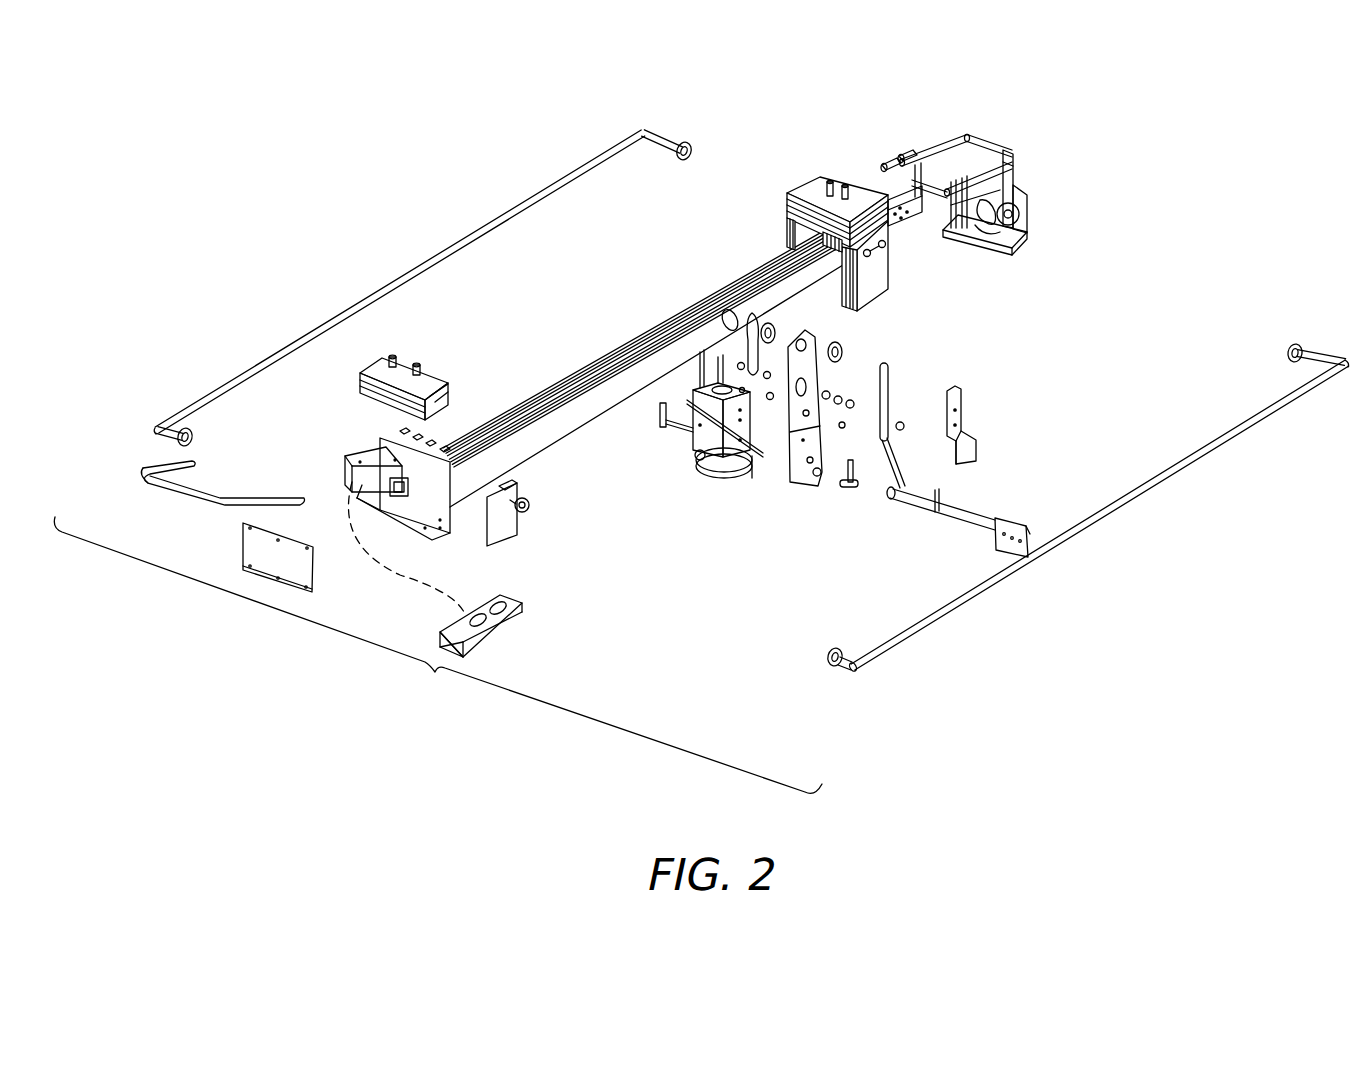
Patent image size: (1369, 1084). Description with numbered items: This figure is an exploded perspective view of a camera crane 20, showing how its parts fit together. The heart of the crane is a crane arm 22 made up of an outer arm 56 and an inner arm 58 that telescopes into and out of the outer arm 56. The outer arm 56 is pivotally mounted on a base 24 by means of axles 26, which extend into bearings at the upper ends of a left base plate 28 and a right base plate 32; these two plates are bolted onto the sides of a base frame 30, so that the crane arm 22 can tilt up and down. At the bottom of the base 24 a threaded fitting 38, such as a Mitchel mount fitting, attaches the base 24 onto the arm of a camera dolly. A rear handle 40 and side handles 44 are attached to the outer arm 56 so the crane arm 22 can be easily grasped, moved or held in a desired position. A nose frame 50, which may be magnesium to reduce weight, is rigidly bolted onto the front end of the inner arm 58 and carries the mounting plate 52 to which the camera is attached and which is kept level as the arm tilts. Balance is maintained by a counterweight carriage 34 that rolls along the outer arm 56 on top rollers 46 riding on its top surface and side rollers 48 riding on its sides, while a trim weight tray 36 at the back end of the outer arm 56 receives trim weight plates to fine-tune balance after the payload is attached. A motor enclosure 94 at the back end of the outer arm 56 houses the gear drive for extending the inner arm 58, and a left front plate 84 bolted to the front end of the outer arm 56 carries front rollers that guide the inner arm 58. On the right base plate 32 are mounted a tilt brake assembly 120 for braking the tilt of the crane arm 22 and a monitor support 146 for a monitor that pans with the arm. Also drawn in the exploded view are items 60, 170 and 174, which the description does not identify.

The camera crane 20 is at (652, 560).
The crane arm 22 is at (600, 384).
The base 24 is at (700, 484).
The axles 26 is at (731, 294).
The left base plate 28 is at (738, 470).
The base frame 30 is at (708, 451).
The right base plate 32 is at (803, 454).
The counterweight carriage 34 is at (819, 214).
The trim weight tray 36 is at (458, 382).
The threaded fitting 38 is at (728, 474).
The rear handle 40 is at (202, 494).
The side handles 44 is at (470, 236).
The top rollers 46 is at (787, 218).
The side rollers 48 is at (833, 240).
The nose frame 50 is at (988, 200).
The mounting plate 52 is at (993, 253).
The outer arm 56 is at (582, 412).
The inner arm 58 is at (891, 256).
The bolts 60 is at (886, 168).
The left front plate 84 is at (898, 224).
The motor enclosure 94 is at (358, 478).
The tilt brake assembly 120 is at (922, 384).
The monitor support 146 is at (978, 531).
The foot assembly 170 is at (436, 612).
The foot block 174 is at (502, 627).